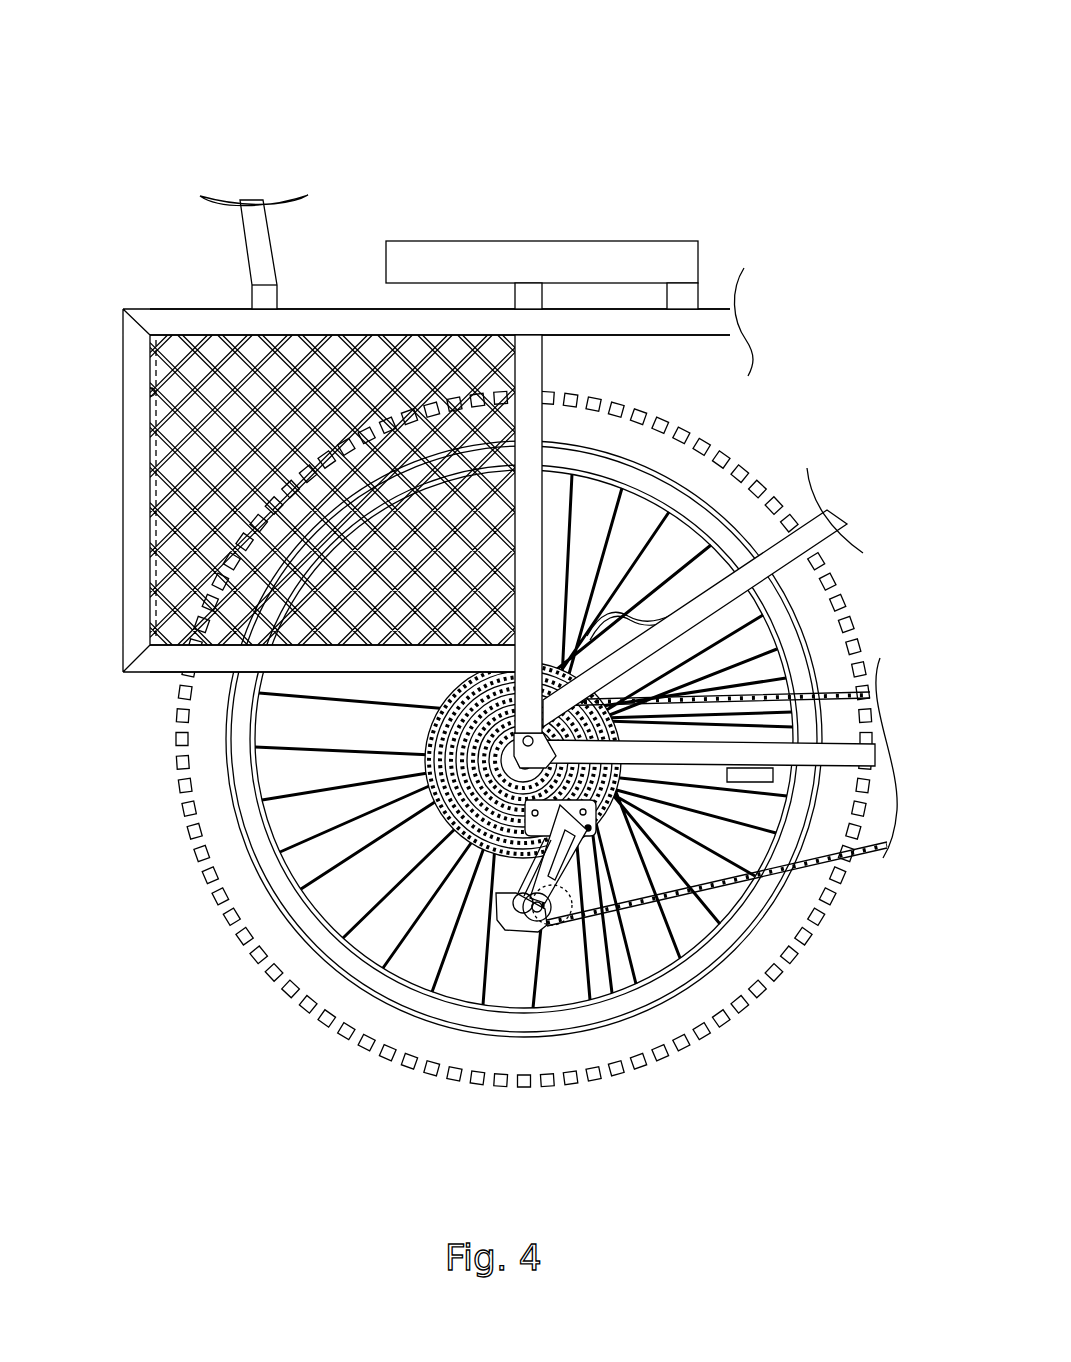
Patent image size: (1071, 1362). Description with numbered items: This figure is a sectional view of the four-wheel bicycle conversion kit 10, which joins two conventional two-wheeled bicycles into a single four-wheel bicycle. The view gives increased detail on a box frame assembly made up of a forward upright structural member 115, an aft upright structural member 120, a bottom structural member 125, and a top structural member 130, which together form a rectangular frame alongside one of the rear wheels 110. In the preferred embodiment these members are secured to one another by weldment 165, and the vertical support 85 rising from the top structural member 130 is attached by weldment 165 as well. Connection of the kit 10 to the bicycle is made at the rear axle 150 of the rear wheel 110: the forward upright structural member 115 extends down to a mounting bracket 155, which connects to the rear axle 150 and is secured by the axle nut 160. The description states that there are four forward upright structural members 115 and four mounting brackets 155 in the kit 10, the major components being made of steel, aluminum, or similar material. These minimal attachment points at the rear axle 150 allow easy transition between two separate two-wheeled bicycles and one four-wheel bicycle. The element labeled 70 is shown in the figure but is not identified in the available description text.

The four-wheel bicycle conversion kit 10 is at (106, 165).
The battery box 70 is at (515, 252).
The vertical support 85 is at (258, 228).
The rear wheel 110 is at (830, 608).
The forward upright structural member 115 is at (528, 438).
The aft upright structural member 120 is at (135, 493).
The bottom structural member 125 is at (317, 662).
The top structural member 130 is at (280, 323).
The rear axle 150 is at (437, 770).
The mounting bracket 155 is at (527, 703).
The axle nut 160 is at (468, 830).
The weldment 165 is at (280, 308).